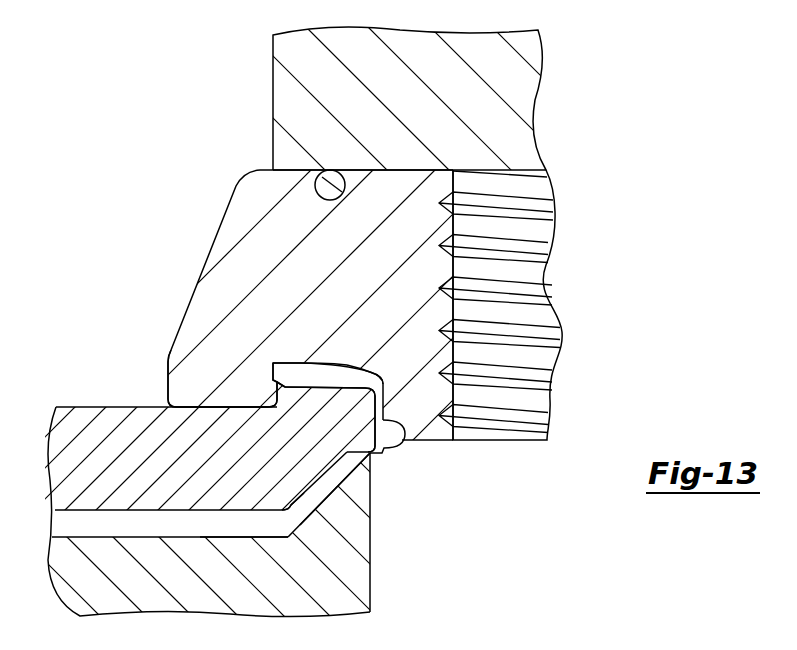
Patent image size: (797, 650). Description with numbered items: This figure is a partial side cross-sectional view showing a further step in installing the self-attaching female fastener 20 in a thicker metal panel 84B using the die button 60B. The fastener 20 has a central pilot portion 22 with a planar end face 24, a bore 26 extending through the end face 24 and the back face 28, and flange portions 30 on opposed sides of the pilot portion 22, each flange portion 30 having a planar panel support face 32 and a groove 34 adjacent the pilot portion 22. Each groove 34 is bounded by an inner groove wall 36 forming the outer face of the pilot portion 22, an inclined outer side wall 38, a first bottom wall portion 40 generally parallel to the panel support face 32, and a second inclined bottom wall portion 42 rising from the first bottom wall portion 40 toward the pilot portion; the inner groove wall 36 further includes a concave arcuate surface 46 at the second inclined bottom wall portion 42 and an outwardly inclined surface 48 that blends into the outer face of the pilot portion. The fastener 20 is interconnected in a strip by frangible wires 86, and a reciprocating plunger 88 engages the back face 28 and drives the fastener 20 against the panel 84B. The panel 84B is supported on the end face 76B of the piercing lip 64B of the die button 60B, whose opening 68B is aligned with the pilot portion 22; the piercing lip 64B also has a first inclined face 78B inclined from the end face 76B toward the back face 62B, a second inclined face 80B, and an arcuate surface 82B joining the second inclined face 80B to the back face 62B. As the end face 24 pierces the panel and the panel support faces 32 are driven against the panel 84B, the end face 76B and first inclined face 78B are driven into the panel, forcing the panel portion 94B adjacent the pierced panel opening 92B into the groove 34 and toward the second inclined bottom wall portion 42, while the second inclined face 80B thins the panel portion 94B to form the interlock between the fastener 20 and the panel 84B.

The self-attaching female fastener 20 is at (158, 240).
The central pilot portion 22 is at (416, 412).
The planar end face 24 is at (466, 444).
The bore 26 is at (532, 271).
The back face 28 is at (398, 170).
The flange portion 30 is at (198, 368).
The panel support face 32 is at (212, 401).
The groove 34 is at (272, 364).
The inner groove wall 36 is at (380, 430).
The inclined outer side wall 38 is at (283, 385).
The first bottom wall portion 40 is at (311, 362).
The second inclined bottom wall portion 42 is at (339, 364).
The concave arcuate surface 46 is at (380, 372).
The outwardly inclined surface 48 is at (375, 392).
The die button 60B is at (299, 578).
The back face 62B is at (132, 551).
The piercing lip 64B is at (347, 513).
The opening 68B is at (360, 545).
The end face 76B is at (352, 460).
The first inclined face 78B is at (321, 474).
The second inclined face 80B is at (297, 522).
The arcuate surface 82B is at (287, 535).
The panel 84B is at (110, 424).
The frangible wires 86 is at (327, 182).
The plunger 88 is at (512, 96).
The pierced panel opening 92B is at (404, 433).
The panel portion 94B is at (324, 380).